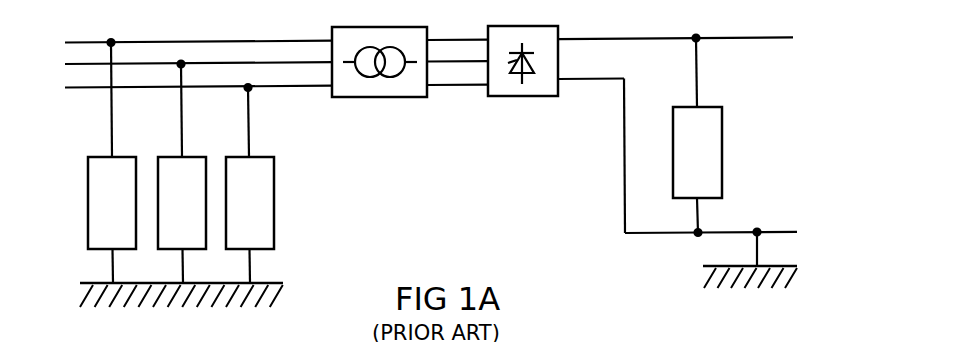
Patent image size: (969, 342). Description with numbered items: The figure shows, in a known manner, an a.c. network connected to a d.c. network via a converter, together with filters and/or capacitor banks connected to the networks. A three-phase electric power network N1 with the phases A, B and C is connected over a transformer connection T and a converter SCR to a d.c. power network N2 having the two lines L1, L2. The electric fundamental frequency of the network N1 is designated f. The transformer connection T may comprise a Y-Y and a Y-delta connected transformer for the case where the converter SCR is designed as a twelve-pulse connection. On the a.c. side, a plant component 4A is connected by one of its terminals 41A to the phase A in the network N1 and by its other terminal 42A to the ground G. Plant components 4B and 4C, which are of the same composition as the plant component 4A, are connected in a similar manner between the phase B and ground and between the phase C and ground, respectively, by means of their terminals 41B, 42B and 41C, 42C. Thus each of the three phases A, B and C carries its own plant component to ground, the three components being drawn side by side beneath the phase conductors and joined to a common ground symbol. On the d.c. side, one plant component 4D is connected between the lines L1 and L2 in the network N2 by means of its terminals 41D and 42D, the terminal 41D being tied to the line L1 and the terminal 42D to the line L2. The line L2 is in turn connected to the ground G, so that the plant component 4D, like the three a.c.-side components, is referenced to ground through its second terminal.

The phase A is at (188, 42).
The phase B is at (188, 65).
The phase C is at (188, 88).
The three-phase electric power network N1 is at (188, 51).
The d.c. power network N2 is at (677, 133).
The terminal 41A is at (111, 123).
The terminal 41B is at (181, 123).
The terminal 41C is at (248, 123).
The terminal 41D is at (696, 72).
The plant component 4A is at (96, 157).
The plant component 4B is at (166, 157).
The plant component 4C is at (235, 157).
The plant component 4D is at (680, 107).
The terminal 42A is at (111, 278).
The terminal 42B is at (181, 278).
The terminal 42C is at (248, 278).
The terminal 42D is at (697, 226).
The transformer connection T is at (381, 99).
The converter SCR is at (519, 98).
The line L1 is at (782, 40).
The line L2 is at (782, 232).
The ground G is at (90, 290).